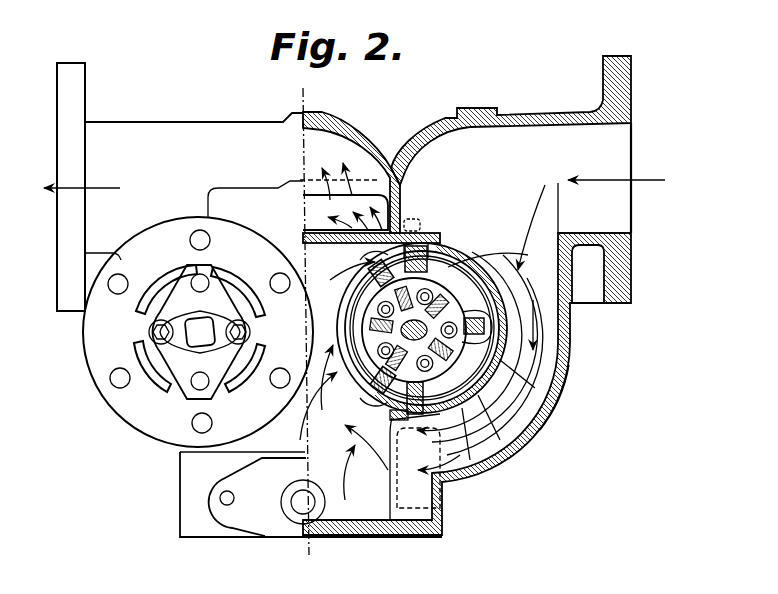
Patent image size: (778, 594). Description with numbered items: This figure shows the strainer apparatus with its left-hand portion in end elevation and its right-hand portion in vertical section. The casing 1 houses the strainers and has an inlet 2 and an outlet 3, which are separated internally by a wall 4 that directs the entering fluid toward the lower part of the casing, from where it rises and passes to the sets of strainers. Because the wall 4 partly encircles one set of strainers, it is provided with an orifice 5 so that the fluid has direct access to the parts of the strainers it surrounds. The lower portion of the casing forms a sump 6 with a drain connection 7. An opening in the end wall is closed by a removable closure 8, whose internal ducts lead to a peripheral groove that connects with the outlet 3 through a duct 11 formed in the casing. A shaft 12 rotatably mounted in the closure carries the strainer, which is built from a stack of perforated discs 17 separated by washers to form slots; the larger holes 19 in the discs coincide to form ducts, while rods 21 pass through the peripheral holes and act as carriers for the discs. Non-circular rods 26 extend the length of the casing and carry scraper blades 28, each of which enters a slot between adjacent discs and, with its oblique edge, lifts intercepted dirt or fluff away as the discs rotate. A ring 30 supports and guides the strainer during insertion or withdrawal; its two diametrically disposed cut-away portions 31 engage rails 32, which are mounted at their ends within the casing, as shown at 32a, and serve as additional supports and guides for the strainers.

The casing 1 is at (318, 150).
The inlet 2 is at (614, 153).
The outlet 3 is at (65, 105).
The wall 4 is at (303, 228).
The orifice 5 is at (530, 318).
The sump 6 is at (354, 498).
The drain connection 7 is at (303, 505).
The closure 8 is at (147, 415).
The duct 11 is at (360, 197).
The shaft 12 is at (452, 306).
The disc 17 is at (506, 432).
The holes 19 is at (322, 335).
The rods 21 is at (320, 305).
The rods 26 is at (363, 278).
The scraper blades 28 is at (552, 380).
The ring 30 is at (458, 280).
The cut-away portions 31 is at (427, 238).
The rails 32 is at (450, 265).
The rail mounting 32a is at (420, 215).